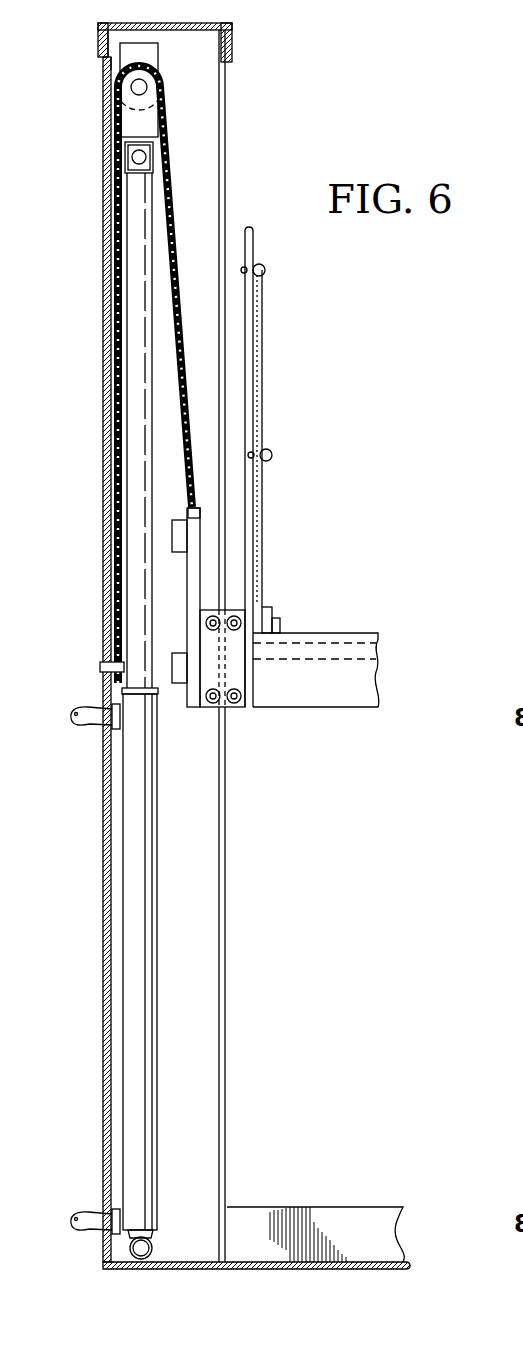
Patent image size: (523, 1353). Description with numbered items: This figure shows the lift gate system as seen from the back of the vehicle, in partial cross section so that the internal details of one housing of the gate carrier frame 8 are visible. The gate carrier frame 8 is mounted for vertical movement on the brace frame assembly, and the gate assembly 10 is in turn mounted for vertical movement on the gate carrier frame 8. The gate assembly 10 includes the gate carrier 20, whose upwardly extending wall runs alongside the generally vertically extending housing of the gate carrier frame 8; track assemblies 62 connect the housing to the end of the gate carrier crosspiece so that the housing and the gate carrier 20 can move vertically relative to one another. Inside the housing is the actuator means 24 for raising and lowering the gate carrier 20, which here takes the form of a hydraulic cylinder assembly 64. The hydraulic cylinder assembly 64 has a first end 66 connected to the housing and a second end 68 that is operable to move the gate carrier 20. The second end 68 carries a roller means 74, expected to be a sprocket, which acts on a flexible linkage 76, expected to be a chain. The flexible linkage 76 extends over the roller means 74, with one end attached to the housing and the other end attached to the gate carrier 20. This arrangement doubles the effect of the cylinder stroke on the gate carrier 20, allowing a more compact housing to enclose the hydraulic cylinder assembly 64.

The gate carrier frame 8 is at (103, 450).
The gate assembly 10 is at (272, 502).
The gate carrier 20 is at (238, 703).
The actuator means 24 is at (178, 173).
The track assemblies 62 is at (233, 705).
The hydraulic cylinder assembly 64 is at (162, 992).
The first end 66 is at (136, 1249).
The second end 68 is at (143, 87).
The roller means 74 is at (103, 72).
The flexible linkage 76 is at (118, 328).